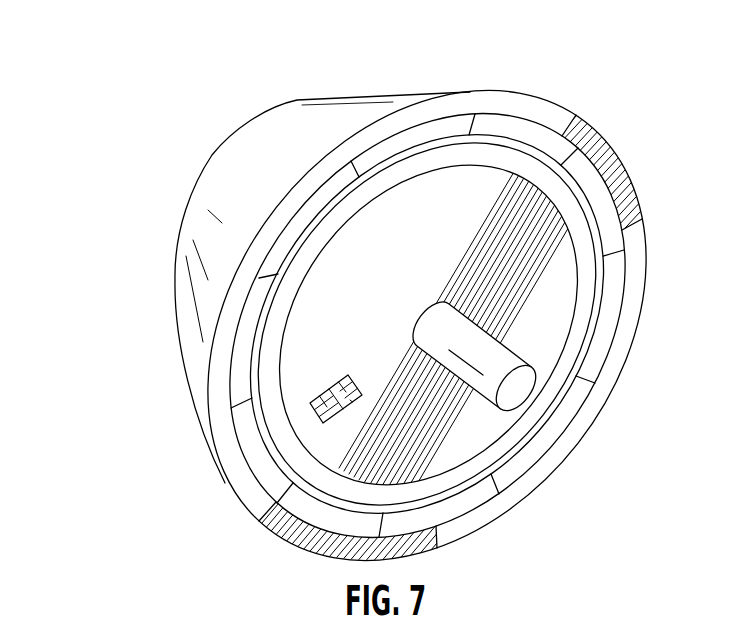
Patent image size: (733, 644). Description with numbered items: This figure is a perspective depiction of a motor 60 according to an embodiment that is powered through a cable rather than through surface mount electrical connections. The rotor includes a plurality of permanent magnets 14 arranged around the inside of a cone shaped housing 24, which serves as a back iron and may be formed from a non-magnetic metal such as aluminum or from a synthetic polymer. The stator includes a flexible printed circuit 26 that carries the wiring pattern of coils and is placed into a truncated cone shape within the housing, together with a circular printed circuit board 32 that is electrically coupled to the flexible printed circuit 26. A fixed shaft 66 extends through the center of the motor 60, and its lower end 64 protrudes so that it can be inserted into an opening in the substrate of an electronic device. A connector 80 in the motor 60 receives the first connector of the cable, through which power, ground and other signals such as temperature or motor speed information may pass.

The motor 60 is at (137, 273).
The cone shaped housing 24 is at (198, 183).
The permanent magnets 14 is at (238, 359).
The flexible printed circuit 26 is at (522, 163).
The printed circuit board 32 is at (383, 208).
The fixed shaft 66 is at (442, 330).
The lower end 64 is at (519, 393).
The connector 80 is at (312, 413).